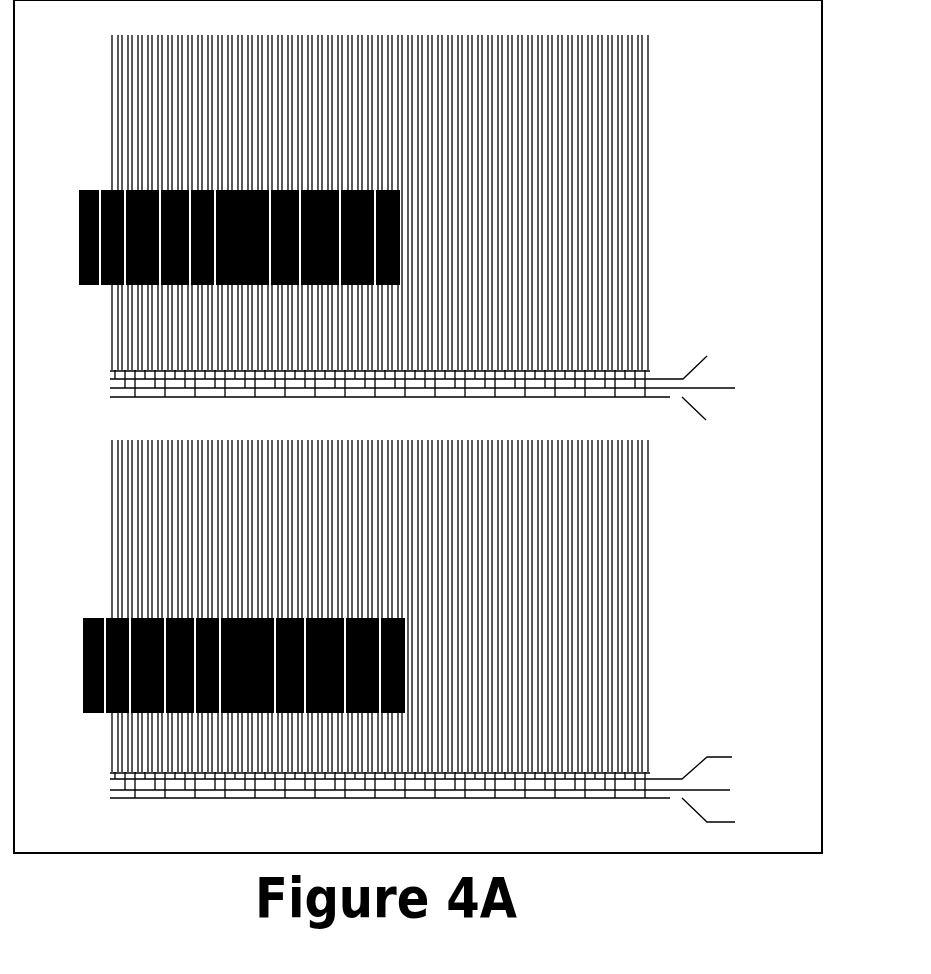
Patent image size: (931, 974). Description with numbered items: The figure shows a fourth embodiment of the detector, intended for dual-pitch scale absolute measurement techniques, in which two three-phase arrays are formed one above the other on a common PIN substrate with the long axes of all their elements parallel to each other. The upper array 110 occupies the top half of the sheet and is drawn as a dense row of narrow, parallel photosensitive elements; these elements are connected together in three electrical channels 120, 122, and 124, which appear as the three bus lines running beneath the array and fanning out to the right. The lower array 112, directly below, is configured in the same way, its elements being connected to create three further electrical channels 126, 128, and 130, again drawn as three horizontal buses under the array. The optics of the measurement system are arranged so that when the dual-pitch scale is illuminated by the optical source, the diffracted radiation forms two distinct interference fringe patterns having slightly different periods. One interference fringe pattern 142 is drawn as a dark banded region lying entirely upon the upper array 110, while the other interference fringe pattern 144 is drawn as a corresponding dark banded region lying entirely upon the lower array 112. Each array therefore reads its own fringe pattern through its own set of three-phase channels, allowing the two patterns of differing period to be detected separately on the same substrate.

The upper array 110 is at (380, 216).
The lower array 112 is at (380, 619).
The first electrical channel of upper array 120 is at (450, 361).
The second electrical channel of upper array 122 is at (450, 391).
The third electrical channel of upper array 124 is at (450, 418).
The first electrical channel of lower array 126 is at (450, 762).
The second electrical channel of lower array 128 is at (450, 793).
The third electrical channel of lower array 130 is at (450, 818).
The interference fringe pattern 142 is at (239, 237).
The interference fringe pattern 144 is at (244, 665).